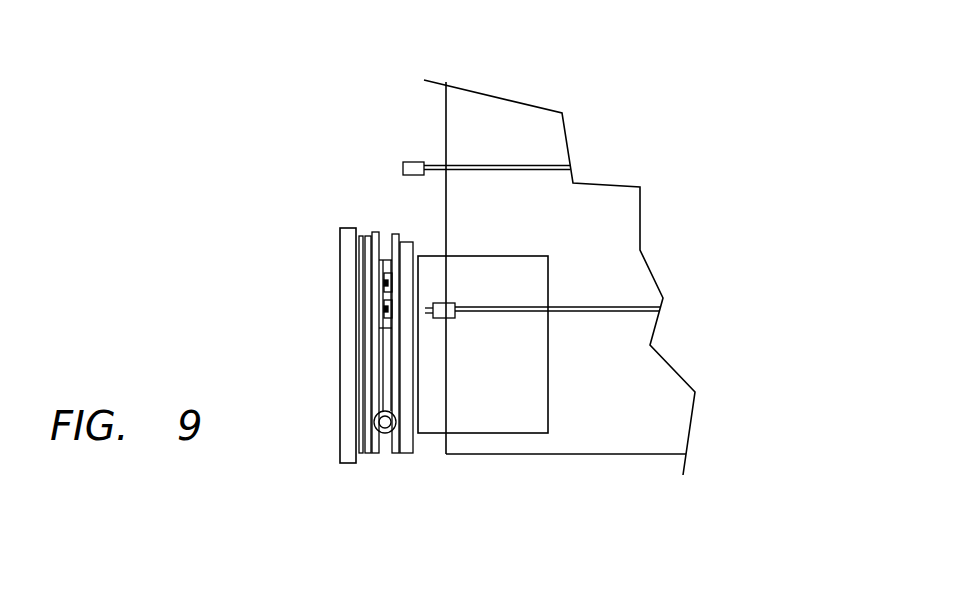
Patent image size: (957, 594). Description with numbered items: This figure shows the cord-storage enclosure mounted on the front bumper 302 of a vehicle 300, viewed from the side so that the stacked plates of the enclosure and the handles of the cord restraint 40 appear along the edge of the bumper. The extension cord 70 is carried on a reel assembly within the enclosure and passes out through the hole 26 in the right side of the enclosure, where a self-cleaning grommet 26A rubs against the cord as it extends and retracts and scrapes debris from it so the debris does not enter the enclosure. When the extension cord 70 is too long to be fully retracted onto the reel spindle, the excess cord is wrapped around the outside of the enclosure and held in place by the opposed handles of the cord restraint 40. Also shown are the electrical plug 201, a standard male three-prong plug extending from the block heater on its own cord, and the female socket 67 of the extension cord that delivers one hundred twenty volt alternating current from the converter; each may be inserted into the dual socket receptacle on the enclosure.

The second hole 26 is at (380, 437).
The self-cleaning grommet 26A is at (383, 437).
The cord restraint 40 is at (348, 223).
The female socket 67 is at (422, 160).
The extension cord 70 is at (395, 237).
The electrical plug 201 is at (448, 318).
The vehicle 300 is at (537, 103).
The front bumper 302 is at (538, 348).